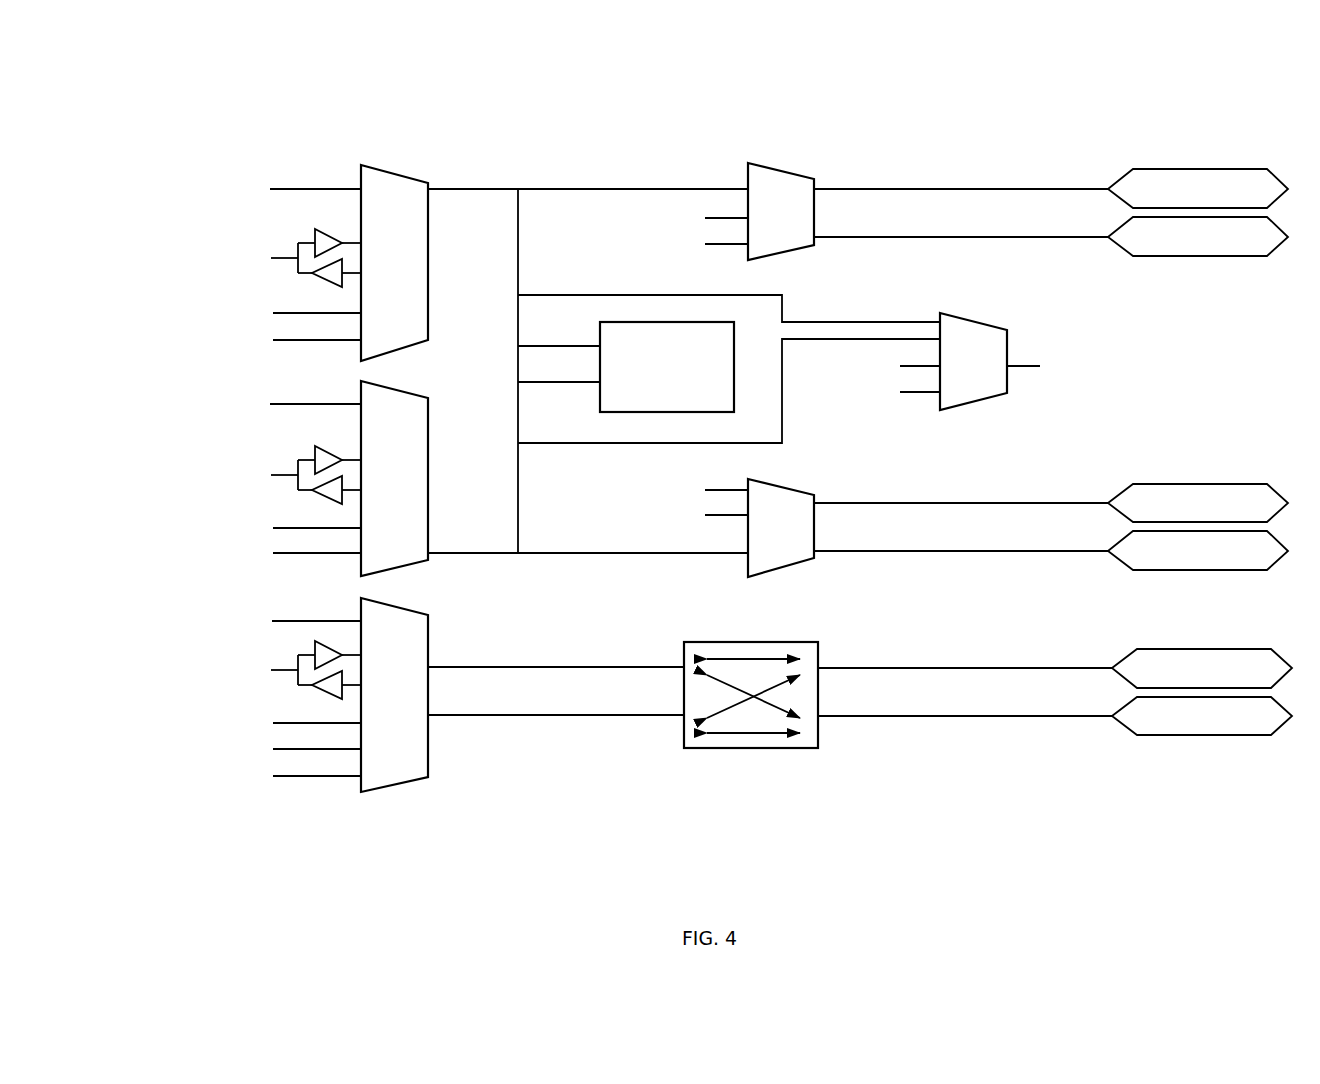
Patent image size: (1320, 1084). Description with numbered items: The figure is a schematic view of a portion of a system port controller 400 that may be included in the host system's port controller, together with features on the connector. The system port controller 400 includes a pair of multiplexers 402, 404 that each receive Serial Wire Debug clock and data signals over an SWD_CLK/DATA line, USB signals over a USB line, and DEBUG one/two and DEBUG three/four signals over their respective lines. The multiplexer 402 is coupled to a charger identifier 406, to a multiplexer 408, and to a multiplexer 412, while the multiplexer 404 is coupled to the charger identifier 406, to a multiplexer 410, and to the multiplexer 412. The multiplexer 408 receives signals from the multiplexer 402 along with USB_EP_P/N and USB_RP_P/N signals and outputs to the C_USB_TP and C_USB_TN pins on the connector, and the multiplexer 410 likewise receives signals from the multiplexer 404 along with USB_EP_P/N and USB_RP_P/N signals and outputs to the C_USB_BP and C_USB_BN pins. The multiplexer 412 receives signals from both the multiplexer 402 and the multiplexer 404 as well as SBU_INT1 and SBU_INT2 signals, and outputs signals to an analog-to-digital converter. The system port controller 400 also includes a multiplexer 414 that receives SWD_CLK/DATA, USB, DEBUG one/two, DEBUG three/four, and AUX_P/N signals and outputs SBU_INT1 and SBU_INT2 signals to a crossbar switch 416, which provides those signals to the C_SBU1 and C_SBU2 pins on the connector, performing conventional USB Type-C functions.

The system port controller 400 is at (172, 130).
The multiplexer 402 is at (412, 271).
The multiplexer 404 is at (412, 481).
The charger identifier 406 is at (684, 402).
The multiplexer 408 is at (795, 224).
The multiplexer 410 is at (795, 538).
The multiplexer 412 is at (987, 374).
The multiplexer 414 is at (412, 703).
The crossbar switch 416 is at (749, 748).